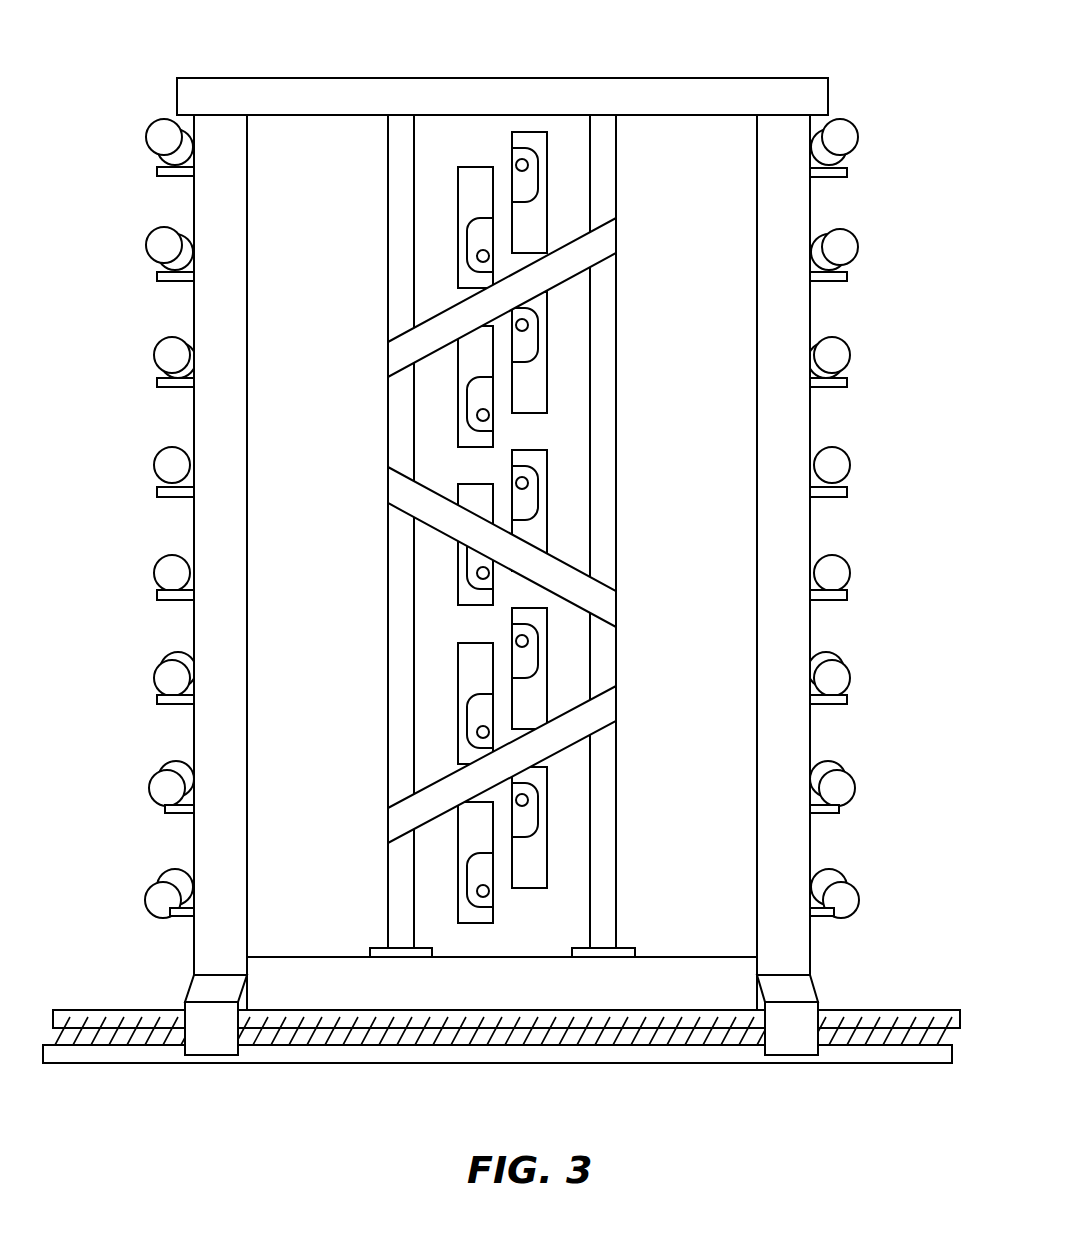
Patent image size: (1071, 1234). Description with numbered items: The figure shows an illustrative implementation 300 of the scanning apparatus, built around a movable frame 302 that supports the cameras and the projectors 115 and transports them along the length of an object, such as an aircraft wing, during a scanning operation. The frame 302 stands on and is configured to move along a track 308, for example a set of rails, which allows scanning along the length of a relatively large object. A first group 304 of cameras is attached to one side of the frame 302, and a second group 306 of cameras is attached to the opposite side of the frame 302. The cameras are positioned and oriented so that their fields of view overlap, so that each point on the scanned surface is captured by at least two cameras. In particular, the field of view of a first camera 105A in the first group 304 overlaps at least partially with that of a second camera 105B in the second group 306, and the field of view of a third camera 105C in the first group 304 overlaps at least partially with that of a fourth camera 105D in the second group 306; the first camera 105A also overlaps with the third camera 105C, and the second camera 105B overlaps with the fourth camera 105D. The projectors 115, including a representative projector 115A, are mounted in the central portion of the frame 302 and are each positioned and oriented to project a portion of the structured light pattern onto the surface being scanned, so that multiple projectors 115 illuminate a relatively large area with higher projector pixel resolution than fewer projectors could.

The implementation 300 is at (503, 533).
The movable frame 302 is at (662, 78).
The first group 304 is at (139, 102).
The second group 306 is at (856, 84).
The track 308 is at (130, 1010).
The projectors 115 is at (415, 480).
The representative projector 115A is at (457, 208).
The first camera 105A is at (147, 135).
The second camera 105B is at (858, 136).
The third camera 105C is at (150, 246).
The fourth camera 105D is at (857, 248).